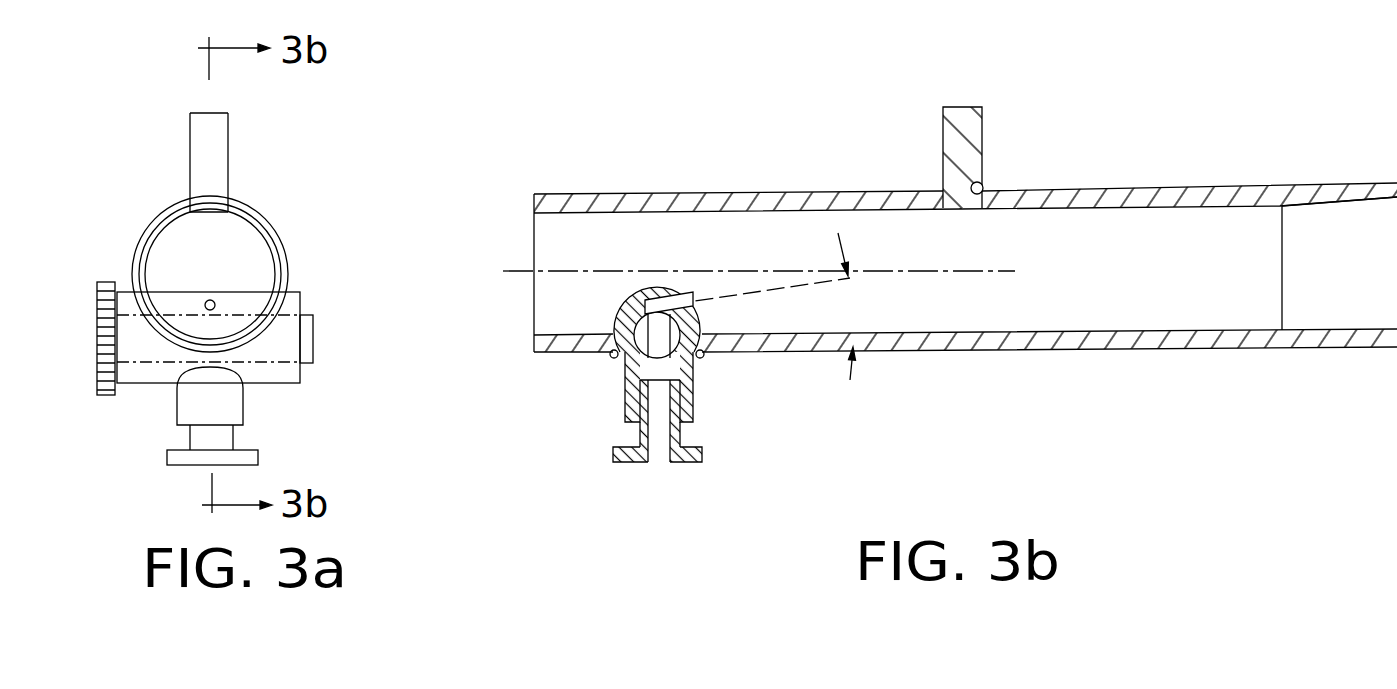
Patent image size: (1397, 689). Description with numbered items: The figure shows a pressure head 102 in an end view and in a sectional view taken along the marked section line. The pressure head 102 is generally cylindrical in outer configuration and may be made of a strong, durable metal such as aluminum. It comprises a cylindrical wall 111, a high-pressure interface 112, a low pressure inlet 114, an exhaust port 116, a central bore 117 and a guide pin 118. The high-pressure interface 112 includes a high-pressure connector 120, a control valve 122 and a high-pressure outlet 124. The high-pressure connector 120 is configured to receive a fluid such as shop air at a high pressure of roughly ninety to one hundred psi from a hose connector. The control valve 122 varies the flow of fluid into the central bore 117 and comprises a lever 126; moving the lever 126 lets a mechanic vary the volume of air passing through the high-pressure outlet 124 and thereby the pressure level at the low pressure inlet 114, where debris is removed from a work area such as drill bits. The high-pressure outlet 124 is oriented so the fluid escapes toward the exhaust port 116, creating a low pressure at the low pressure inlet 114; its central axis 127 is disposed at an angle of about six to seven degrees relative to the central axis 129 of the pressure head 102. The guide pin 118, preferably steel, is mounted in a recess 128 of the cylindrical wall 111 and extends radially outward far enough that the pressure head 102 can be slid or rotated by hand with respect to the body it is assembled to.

In FIG. 3a, the pressure head 102 is at (313, 248).
In FIG. 3b, the pressure head 102 is at (935, 238).
In FIG. 3b, the cylindrical wall 111 is at (1087, 191).
In FIG. 3a, the high-pressure interface 112 is at (286, 396).
In FIG. 3b, the high-pressure interface 112 is at (644, 344).
In FIG. 3b, the low pressure inlet 114 is at (560, 335).
In FIG. 3b, the exhaust port 116 is at (1315, 207).
In FIG. 3b, the central bore 117 is at (1180, 207).
In FIG. 3b, the guide pin 118 is at (958, 107).
In FIG. 3b, the high-pressure connector 120 is at (683, 436).
In FIG. 3a, the control valve 122 is at (314, 338).
In FIG. 3a, the high-pressure outlet 124 is at (214, 301).
In FIG. 3b, the high-pressure outlet 124 is at (705, 280).
In FIG. 3a, the lever 126 is at (103, 397).
In FIG. 3b, the central axis of the high-pressure outlet 127 is at (860, 280).
In FIG. 3b, the recess 128 is at (978, 182).
In FIG. 3b, the central axis of the pressure head 129 is at (692, 272).